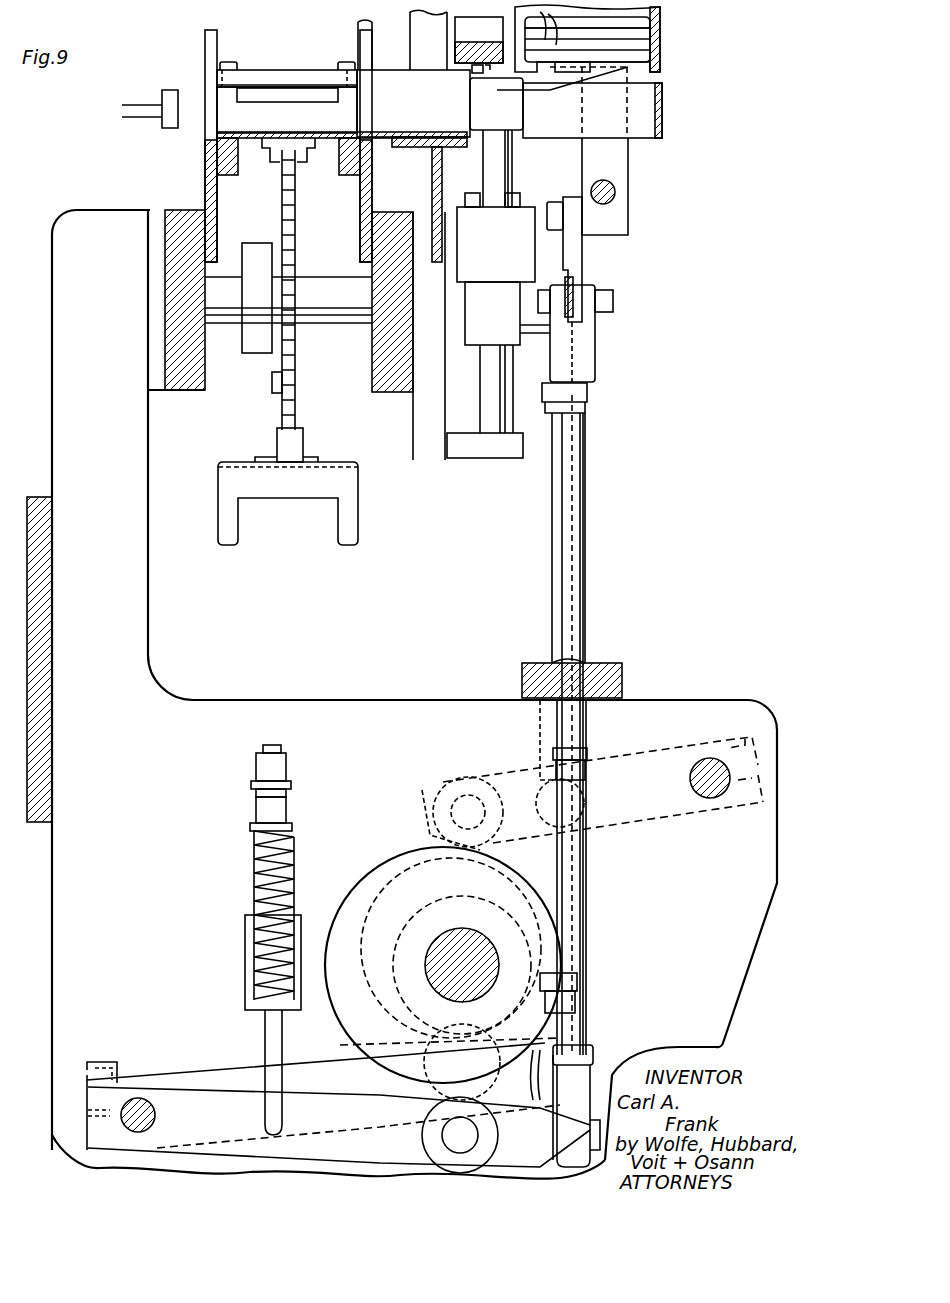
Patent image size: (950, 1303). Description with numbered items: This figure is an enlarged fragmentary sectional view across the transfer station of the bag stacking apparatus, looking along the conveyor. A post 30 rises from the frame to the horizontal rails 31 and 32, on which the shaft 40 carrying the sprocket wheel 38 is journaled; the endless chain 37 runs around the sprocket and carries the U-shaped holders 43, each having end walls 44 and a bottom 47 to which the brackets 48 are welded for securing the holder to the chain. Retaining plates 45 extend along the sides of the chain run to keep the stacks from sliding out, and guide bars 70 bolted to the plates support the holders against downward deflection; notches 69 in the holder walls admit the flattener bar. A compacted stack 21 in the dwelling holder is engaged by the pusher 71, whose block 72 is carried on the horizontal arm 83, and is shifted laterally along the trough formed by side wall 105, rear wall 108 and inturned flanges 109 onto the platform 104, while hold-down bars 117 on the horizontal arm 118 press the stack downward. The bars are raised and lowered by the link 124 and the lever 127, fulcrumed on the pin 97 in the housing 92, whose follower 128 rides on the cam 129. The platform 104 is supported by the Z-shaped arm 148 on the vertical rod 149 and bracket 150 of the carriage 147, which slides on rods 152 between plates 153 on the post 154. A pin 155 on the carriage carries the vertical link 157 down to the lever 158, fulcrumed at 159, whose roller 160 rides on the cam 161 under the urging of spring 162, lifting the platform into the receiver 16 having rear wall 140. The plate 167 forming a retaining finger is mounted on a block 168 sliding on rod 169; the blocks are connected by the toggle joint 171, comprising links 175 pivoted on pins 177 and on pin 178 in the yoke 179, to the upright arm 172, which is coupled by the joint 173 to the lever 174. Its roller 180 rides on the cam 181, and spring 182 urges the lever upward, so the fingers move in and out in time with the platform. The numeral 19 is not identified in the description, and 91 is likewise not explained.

The receiver 16 is at (673, 33).
The coil 19 is at (587, 35).
The stack 21 is at (660, 22).
The post 30 is at (52, 427).
The rail 31 is at (188, 390).
The rail 32 is at (390, 392).
The endless chain 37 is at (277, 436).
The sprocket wheel 38 is at (282, 407).
The shaft 40 is at (335, 322).
The holder 43 is at (224, 499).
The end wall 44 is at (228, 477).
The retaining plate 45 is at (205, 186).
The bottom 47 is at (266, 140).
The bracket 48 is at (306, 140).
The notch 69 is at (237, 66).
The guide bar 70 is at (230, 175).
The pusher 71 is at (150, 137).
The block 72 is at (168, 129).
The horizontal arm 83 is at (122, 110).
The cover plate 91 is at (32, 818).
The housing 92 is at (56, 863).
The pin 97 is at (716, 796).
The platform 104 is at (640, 60).
The side wall 105 is at (372, 106).
The rear wall 108 is at (663, 115).
The flange 109 is at (425, 135).
The hold-down bar 117 is at (307, 72).
The horizontal arm 118 is at (474, 24).
The link 124 is at (553, 749).
The lever 127 is at (660, 753).
The follower 128 is at (440, 782).
The cam 129 is at (420, 850).
The rear wall 140 is at (662, 48).
The carriage 147 is at (458, 325).
The Z-shaped arm 148 is at (522, 115).
The vertical rod 149 is at (509, 157).
The bracket 150 is at (535, 270).
The rod 152 is at (520, 372).
The plate 153 is at (475, 457).
The post 154 is at (413, 425).
The pin 155 is at (532, 342).
The vertical link 157 is at (553, 521).
The lever 158 is at (235, 1077).
The fulcrum 159 is at (155, 1113).
The roller 160 is at (443, 973).
The cam 161 is at (381, 1026).
The spring 162 is at (255, 792).
The plate 167 is at (607, 72).
The block 168 is at (620, 179).
The rod 169 is at (616, 192).
The toggle joint 171 is at (623, 290).
The upright arm 172 is at (585, 617).
The joint 173 is at (548, 1147).
The lever 174 is at (345, 1100).
The link 175 is at (569, 283).
The pin 177 is at (553, 202).
The pin 178 is at (614, 301).
The yoke 179 is at (595, 340).
The roller 180 is at (422, 1144).
The cam 181 is at (368, 1047).
The spring 182 is at (292, 894).